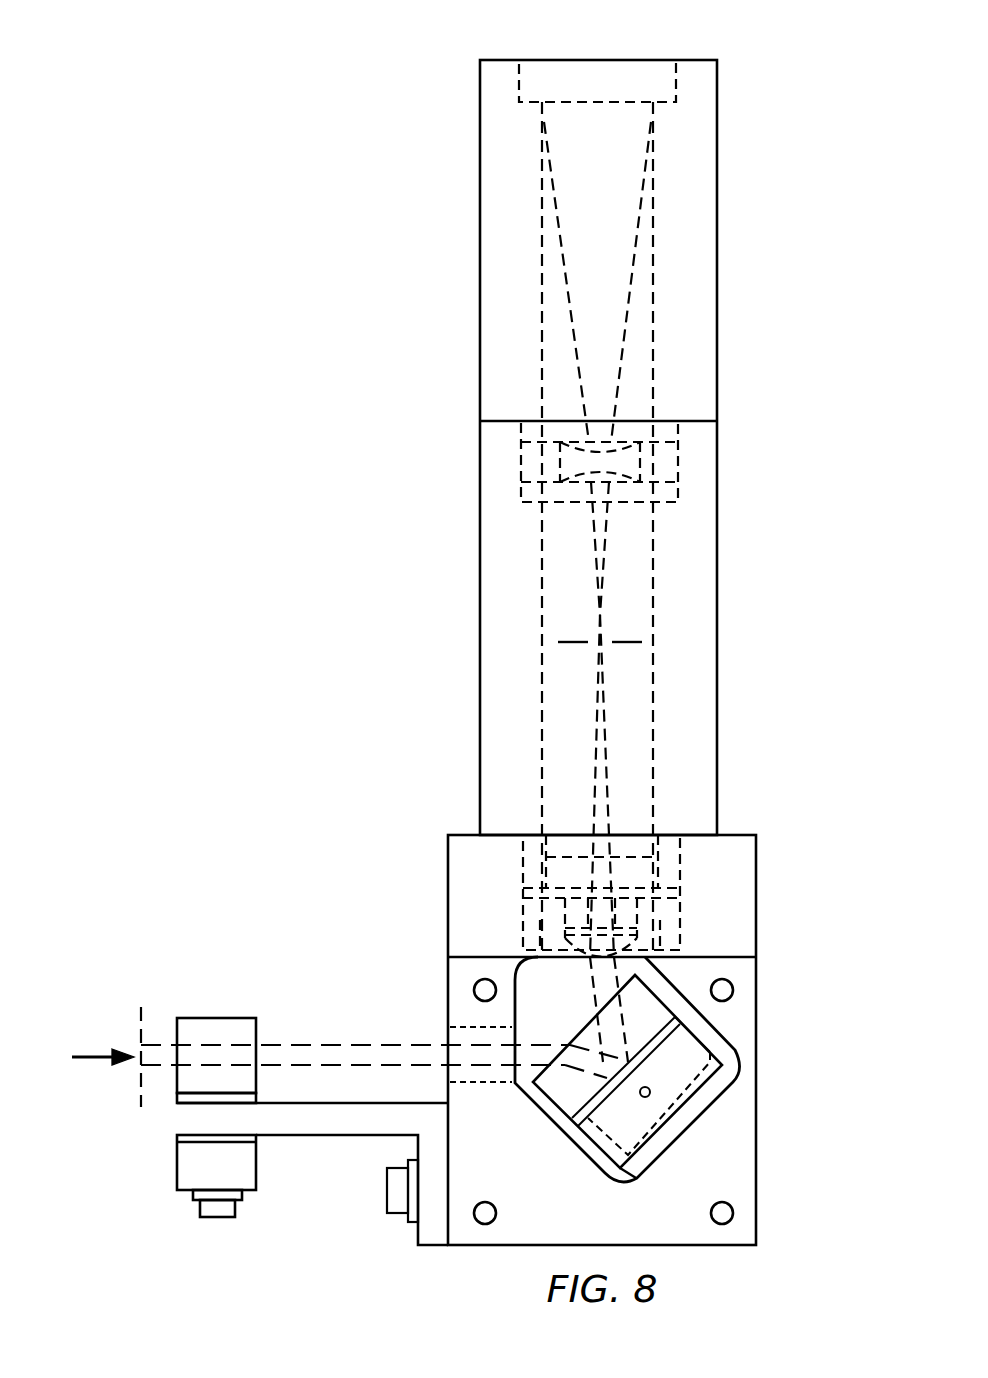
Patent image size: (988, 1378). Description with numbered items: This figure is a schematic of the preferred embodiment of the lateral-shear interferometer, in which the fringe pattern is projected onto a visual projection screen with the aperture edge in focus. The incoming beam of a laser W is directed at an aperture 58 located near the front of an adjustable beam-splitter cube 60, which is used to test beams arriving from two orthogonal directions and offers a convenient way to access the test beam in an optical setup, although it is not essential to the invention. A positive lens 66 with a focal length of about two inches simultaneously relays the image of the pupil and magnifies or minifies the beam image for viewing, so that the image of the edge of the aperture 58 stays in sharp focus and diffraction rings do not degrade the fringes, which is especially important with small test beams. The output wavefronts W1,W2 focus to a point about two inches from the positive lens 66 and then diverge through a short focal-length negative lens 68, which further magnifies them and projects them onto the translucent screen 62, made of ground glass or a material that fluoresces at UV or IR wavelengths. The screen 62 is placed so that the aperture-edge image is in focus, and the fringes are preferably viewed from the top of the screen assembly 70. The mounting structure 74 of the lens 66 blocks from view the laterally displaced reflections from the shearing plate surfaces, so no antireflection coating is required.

The aperture 58 is at (141, 1013).
The adjustable beam-splitter cube 60 is at (217, 1018).
The screen 62 is at (610, 60).
The positive lens 66 is at (680, 940).
The negative lens 68 is at (678, 468).
The screen assembly 70 is at (717, 238).
The mounting structure 74 is at (757, 892).
The laser beam W is at (352, 1052).
The output wavefronts W1,W2 is at (562, 578).